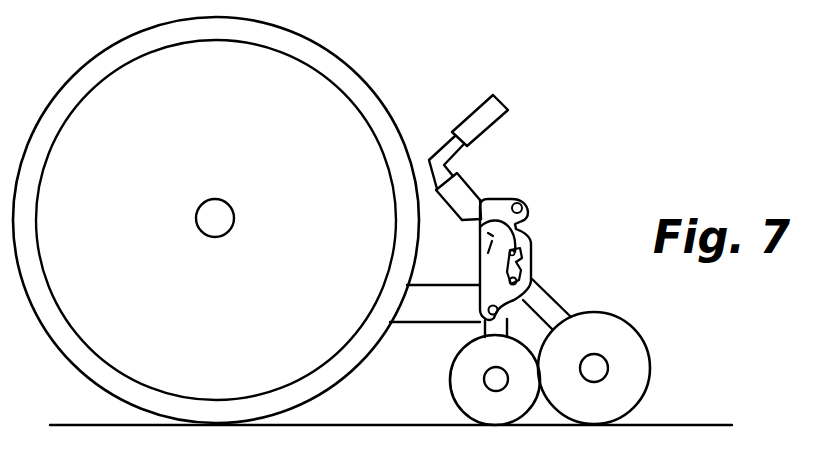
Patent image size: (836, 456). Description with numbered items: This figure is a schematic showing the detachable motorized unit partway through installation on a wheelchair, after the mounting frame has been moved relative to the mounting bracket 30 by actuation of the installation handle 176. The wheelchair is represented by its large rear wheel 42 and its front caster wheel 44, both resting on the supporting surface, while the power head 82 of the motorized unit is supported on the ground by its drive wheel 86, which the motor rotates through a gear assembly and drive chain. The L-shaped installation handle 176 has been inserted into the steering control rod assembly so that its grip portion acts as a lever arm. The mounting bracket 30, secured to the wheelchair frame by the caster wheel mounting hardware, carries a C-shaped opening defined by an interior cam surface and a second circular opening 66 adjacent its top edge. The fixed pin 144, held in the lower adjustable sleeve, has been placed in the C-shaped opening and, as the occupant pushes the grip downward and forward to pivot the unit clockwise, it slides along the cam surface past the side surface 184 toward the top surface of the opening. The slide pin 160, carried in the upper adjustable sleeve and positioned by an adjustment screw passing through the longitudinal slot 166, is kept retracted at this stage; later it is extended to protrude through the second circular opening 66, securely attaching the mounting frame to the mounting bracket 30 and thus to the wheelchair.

The rear wheel 42 is at (332, 63).
The installation handle 176 is at (424, 152).
The second circular opening 66 is at (527, 201).
The mounting bracket 30 is at (524, 231).
The fixed pin 144 is at (521, 250).
The side surface 184 is at (522, 264).
The longitudinal slot 166 is at (481, 221).
The slide pin 160 is at (480, 257).
The power head 82 is at (518, 278).
The front caster wheel 44 is at (451, 377).
The drive wheel 86 is at (647, 387).